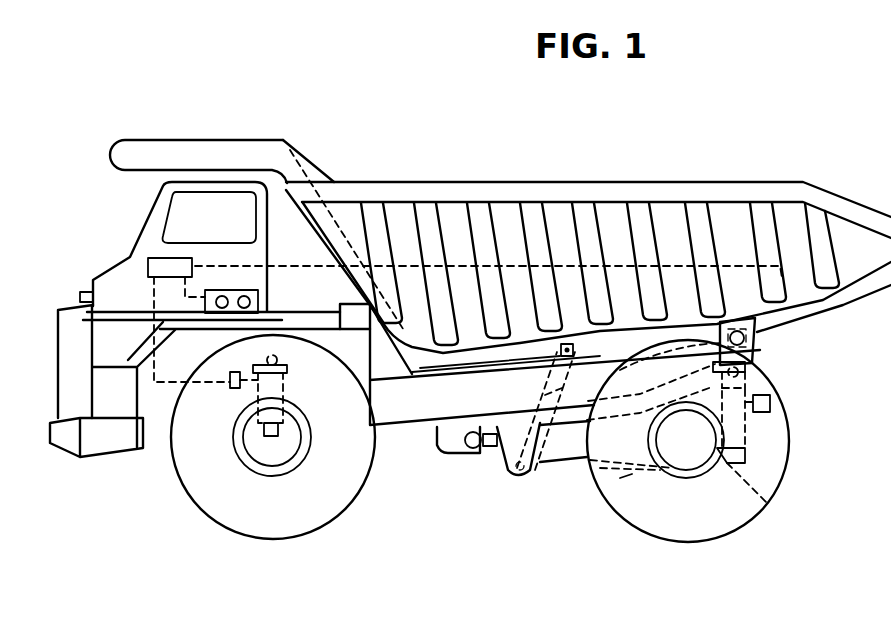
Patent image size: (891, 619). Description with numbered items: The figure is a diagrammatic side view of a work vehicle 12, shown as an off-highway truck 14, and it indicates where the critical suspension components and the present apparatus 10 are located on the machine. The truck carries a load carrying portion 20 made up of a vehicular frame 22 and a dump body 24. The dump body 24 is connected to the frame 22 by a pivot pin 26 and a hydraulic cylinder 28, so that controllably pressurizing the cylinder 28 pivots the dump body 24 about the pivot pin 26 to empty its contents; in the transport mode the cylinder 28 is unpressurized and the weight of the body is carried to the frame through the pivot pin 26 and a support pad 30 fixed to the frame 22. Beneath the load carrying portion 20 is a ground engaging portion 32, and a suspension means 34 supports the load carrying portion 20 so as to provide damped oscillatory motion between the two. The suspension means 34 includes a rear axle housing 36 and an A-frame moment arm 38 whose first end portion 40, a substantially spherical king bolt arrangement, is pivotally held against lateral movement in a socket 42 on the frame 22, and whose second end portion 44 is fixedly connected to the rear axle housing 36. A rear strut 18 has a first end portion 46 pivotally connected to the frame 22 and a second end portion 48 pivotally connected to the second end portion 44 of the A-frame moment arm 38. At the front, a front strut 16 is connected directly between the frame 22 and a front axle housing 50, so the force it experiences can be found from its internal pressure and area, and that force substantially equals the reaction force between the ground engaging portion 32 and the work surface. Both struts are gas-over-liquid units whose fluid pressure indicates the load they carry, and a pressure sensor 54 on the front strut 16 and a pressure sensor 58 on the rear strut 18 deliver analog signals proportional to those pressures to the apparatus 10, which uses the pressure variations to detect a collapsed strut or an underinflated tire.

The apparatus 10 is at (146, 250).
The work vehicle 12 is at (318, 126).
The off-highway truck 14 is at (196, 227).
The front strut 16 is at (287, 387).
The rear strut 18 is at (742, 437).
The load carrying portion 20 is at (712, 170).
The vehicular frame 22 is at (390, 406).
The dump body 24 is at (605, 247).
The pivot pin 26 is at (762, 345).
The hydraulic cylinder 28 is at (540, 473).
The support pad 30 is at (515, 368).
The ground engaging portion 32 is at (647, 550).
The suspension means 34 is at (641, 474).
The rear axle housing 36 is at (625, 478).
The A-frame moment arm 38 is at (578, 450).
The first end portion 40 is at (497, 463).
The socket 42 is at (447, 440).
The second end portion 44 is at (687, 470).
The first end portion 46 is at (752, 390).
The second end portion 48 is at (776, 503).
The front axle housing 50 is at (262, 455).
The pressure sensor 54 is at (233, 392).
The pressure sensor 58 is at (780, 408).